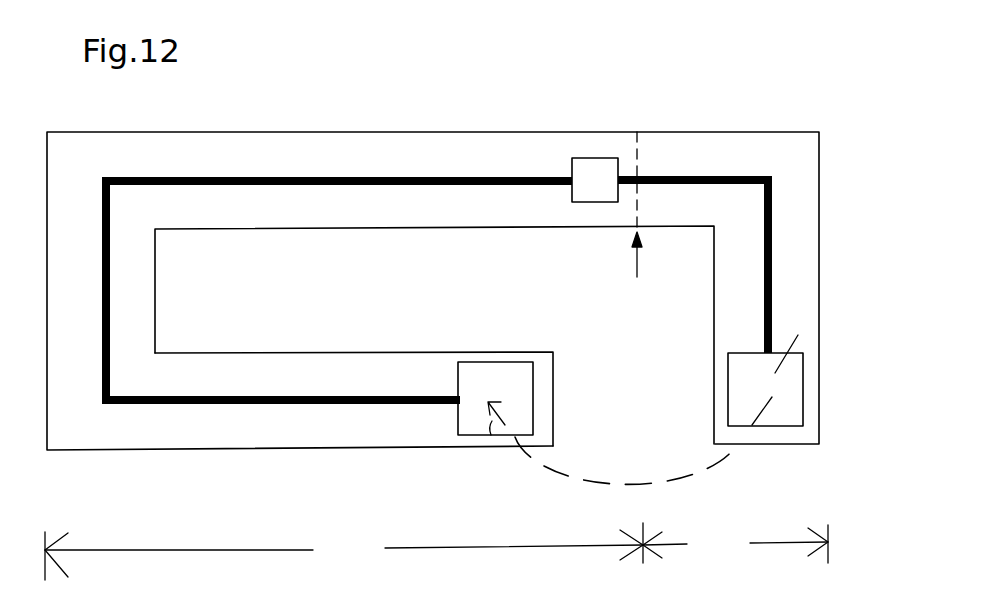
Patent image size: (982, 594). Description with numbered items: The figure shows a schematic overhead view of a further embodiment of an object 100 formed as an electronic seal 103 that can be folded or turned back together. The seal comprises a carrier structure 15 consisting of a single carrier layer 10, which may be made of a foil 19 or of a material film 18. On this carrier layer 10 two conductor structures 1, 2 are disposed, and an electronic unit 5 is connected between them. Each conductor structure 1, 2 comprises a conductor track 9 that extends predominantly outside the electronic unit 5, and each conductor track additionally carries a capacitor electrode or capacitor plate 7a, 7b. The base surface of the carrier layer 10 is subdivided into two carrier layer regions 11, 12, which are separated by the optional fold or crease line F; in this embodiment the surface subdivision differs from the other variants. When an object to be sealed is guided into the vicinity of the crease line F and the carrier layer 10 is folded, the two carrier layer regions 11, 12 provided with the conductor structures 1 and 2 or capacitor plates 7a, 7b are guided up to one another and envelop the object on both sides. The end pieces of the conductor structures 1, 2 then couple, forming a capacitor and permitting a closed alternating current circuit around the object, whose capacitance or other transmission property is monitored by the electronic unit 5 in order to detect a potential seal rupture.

The object 100 is at (433, 266).
The electronic seal 103 is at (340, 93).
The first conductor structure 1 is at (378, 308).
The second conductor structure 2 is at (715, 331).
The conductor track 9 is at (459, 331).
The capacitor plate 7a is at (528, 392).
The capacitor plate 7b is at (775, 423).
The electronic unit 5 is at (595, 193).
The carrier layer 10 is at (692, 200).
The carrier structure 15 is at (692, 200).
The material film 18 is at (692, 200).
The foil 19 is at (692, 200).
The crease line F is at (636, 276).
The first carrier layer region 11 is at (344, 551).
The second carrier layer region 12 is at (735, 544).